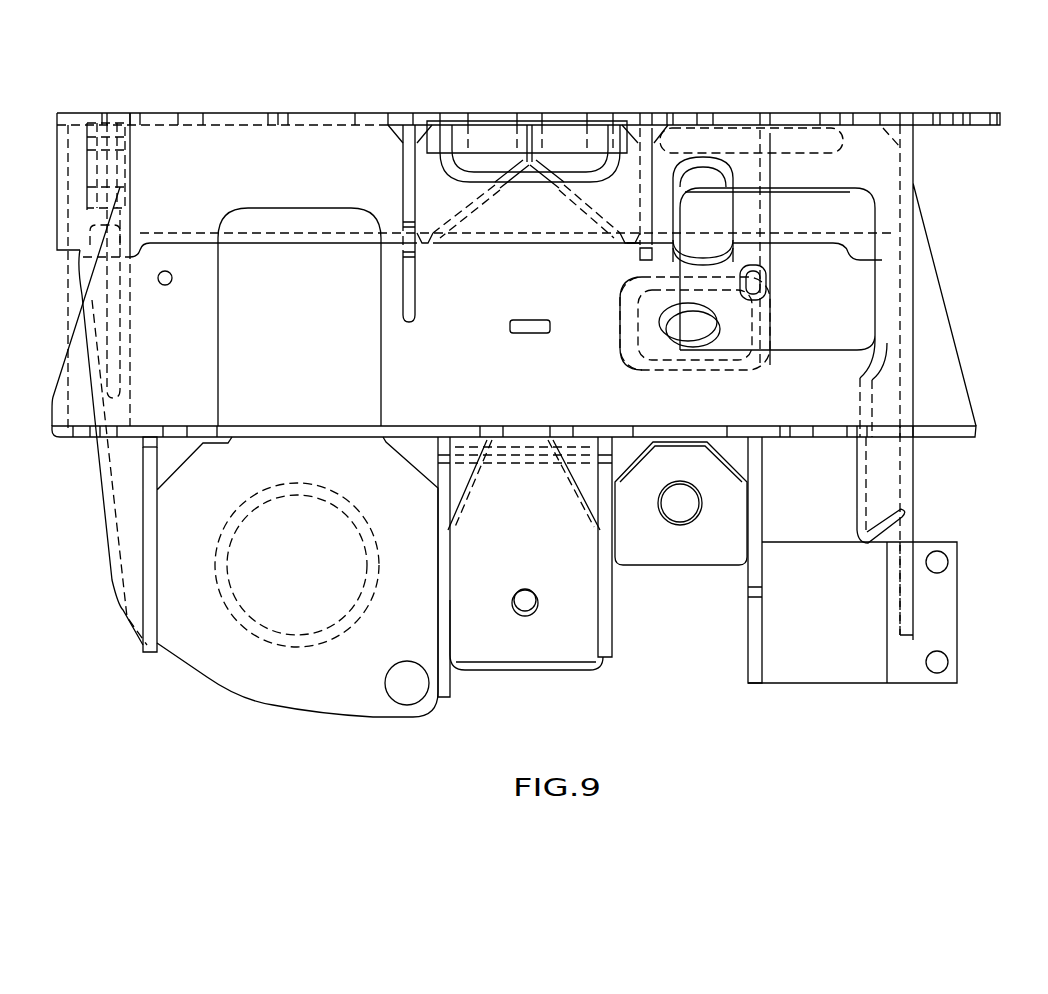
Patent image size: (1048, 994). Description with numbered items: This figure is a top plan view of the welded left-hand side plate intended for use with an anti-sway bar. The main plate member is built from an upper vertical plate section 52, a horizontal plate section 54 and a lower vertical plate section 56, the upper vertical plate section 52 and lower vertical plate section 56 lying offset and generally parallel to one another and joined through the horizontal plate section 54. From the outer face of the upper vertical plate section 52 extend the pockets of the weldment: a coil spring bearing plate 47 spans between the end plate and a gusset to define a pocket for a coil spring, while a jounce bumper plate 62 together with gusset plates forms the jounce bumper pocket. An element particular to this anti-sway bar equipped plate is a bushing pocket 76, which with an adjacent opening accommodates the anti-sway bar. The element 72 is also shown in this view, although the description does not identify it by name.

The coil spring bearing plate 47 is at (203, 675).
The upper vertical plate section 52 is at (417, 425).
The horizontal plate section 54 is at (951, 332).
The lower vertical plate section 56 is at (662, 113).
The jounce bumper plate 62 is at (567, 657).
The module 72 is at (240, 349).
The bushing pocket 76 is at (878, 560).